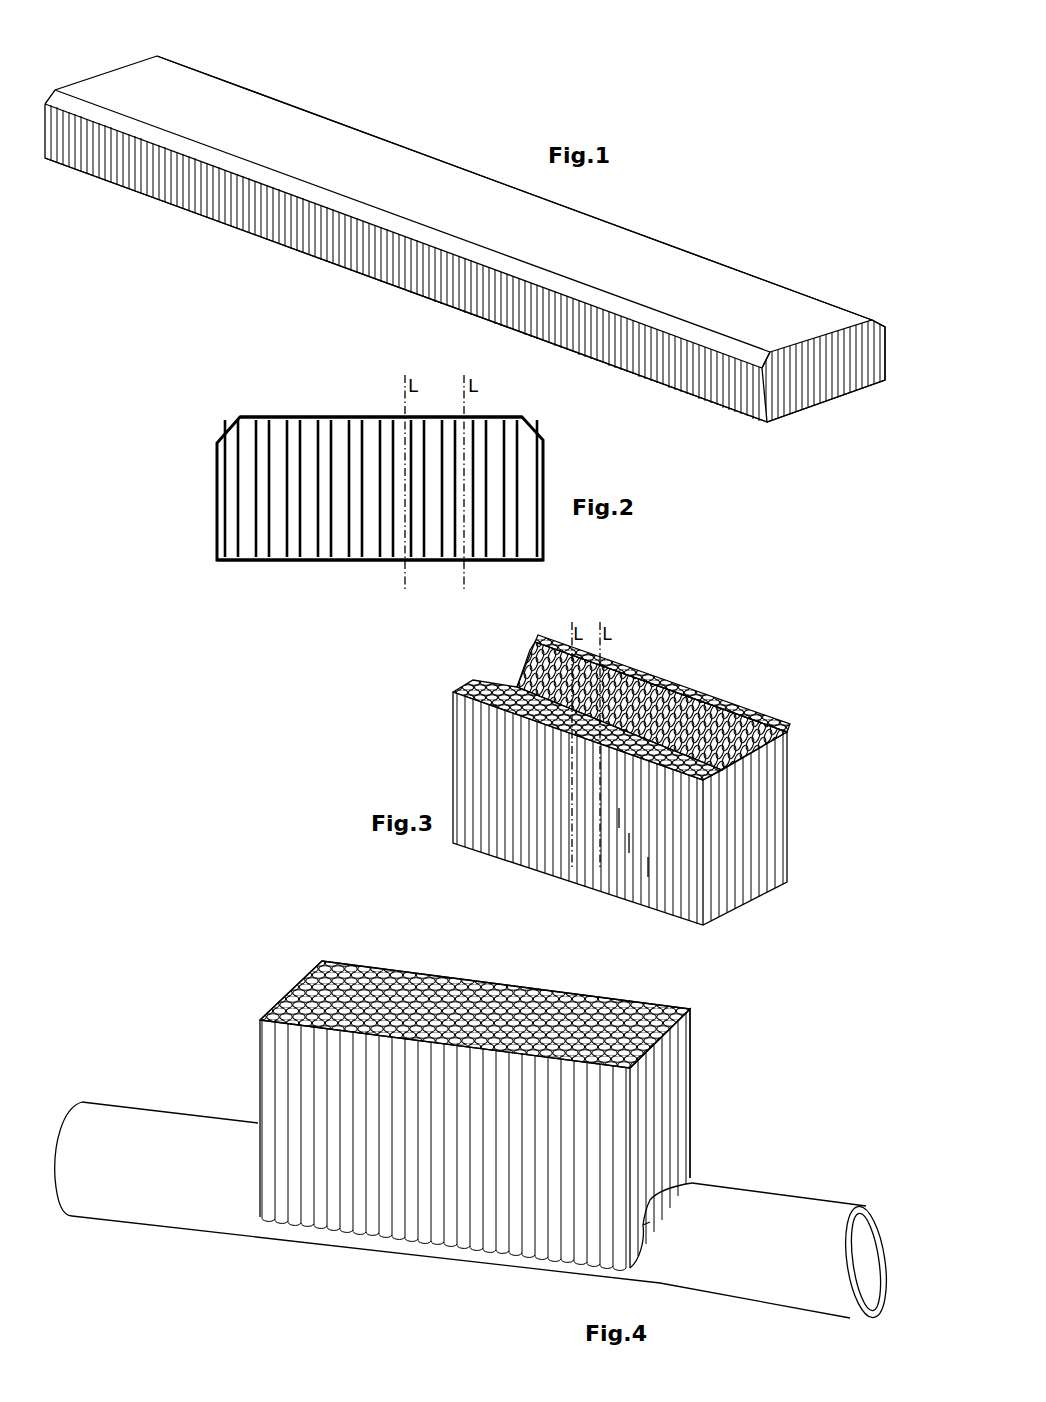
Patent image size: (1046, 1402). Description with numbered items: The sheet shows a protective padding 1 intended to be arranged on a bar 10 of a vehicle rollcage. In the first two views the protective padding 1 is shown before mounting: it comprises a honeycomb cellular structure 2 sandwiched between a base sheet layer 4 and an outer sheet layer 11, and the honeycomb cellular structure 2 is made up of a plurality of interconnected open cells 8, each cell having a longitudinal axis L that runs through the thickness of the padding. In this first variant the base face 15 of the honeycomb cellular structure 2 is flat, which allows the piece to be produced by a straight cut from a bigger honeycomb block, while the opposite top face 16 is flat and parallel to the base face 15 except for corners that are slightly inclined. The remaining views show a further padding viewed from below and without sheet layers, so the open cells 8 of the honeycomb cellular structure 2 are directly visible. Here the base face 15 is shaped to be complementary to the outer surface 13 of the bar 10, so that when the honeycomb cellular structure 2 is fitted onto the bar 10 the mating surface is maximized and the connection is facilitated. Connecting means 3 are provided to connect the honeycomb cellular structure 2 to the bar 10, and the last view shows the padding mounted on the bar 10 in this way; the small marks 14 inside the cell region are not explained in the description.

In FIG. 1, the protective padding 1 is at (662, 220).
In FIG. 2, the protective padding 1 is at (208, 401).
In FIG. 4, the protective padding 1 is at (179, 1009).
In FIG. 3, the honeycomb cellular structure 2 is at (775, 799).
In FIG. 4, the honeycomb cellular structure 2 is at (735, 1069).
In FIG. 4, the connecting means 3 is at (651, 1227).
In FIG. 1, the base sheet layer 4 is at (240, 232).
In FIG. 2, the base sheet layer 4 is at (362, 563).
In FIG. 1, the open cells 8 is at (243, 203).
In FIG. 2, the open cells 8 is at (295, 528).
In FIG. 3, the open cells 8 is at (470, 750).
In FIG. 4, the open cells 8 is at (325, 1093).
In FIG. 4, the bar 10 is at (164, 1215).
In FIG. 1, the outer sheet layer 11 is at (266, 165).
In FIG. 2, the outer sheet layer 11 is at (327, 416).
In FIG. 4, the outer surface 13 is at (795, 1258).
In FIG. 3, the fiber layers 14 is at (634, 842).
In FIG. 3, the base face 15 is at (738, 704).
In FIG. 4, the top face 16 is at (307, 968).